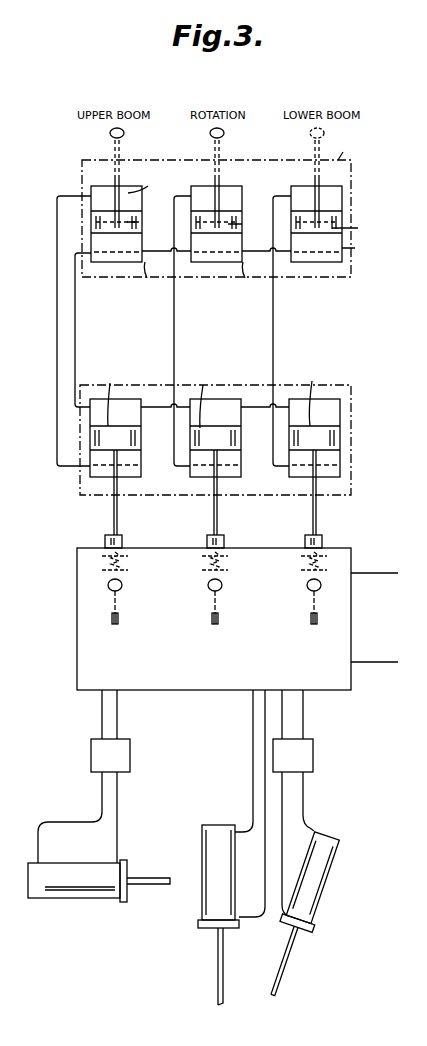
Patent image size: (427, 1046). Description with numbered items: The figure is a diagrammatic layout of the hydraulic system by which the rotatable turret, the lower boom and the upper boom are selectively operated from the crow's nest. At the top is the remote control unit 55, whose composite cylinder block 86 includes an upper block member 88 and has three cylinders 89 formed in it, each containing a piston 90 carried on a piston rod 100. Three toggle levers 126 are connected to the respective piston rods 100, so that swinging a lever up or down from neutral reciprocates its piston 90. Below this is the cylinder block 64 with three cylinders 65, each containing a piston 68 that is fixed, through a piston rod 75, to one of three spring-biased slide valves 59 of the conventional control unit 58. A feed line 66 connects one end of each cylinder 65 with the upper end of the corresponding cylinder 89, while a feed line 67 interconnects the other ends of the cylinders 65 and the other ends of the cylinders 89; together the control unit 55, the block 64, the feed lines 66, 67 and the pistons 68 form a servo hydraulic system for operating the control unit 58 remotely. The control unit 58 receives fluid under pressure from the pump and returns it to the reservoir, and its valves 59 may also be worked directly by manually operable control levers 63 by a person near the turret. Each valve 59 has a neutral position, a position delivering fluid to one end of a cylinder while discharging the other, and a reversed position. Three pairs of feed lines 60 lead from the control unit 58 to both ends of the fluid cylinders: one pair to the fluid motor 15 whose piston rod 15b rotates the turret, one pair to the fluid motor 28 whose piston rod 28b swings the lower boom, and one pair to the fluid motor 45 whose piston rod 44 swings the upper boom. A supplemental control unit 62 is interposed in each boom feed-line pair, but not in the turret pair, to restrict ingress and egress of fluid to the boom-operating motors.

The fluid motor 15 is at (208, 905).
The piston rod 15b is at (218, 971).
The fluid motor 28 is at (320, 884).
The piston rod 28b is at (292, 984).
The piston rod 44 is at (143, 879).
The fluid motor 45 is at (75, 862).
The control unit 55 is at (355, 169).
The control unit 58 is at (347, 553).
The slide valve 59 is at (122, 540).
The feed line 60 is at (102, 714).
The supplemental control unit 62 is at (127, 760).
The control lever 63 is at (117, 607).
The cylinder block 64 is at (351, 490).
The cylinder 65 is at (141, 468).
The feed line 66 is at (57, 351).
The feed line 67 is at (75, 352).
The piston 68 is at (208, 396).
The piston rod 75 is at (117, 515).
The composite cylinder block 86 is at (355, 217).
The upper block member 88 is at (344, 150).
The cylinder 89 is at (254, 273).
The piston 90 is at (127, 222).
The piston rod 100 is at (153, 188).
The toggle lever 126 is at (110, 146).